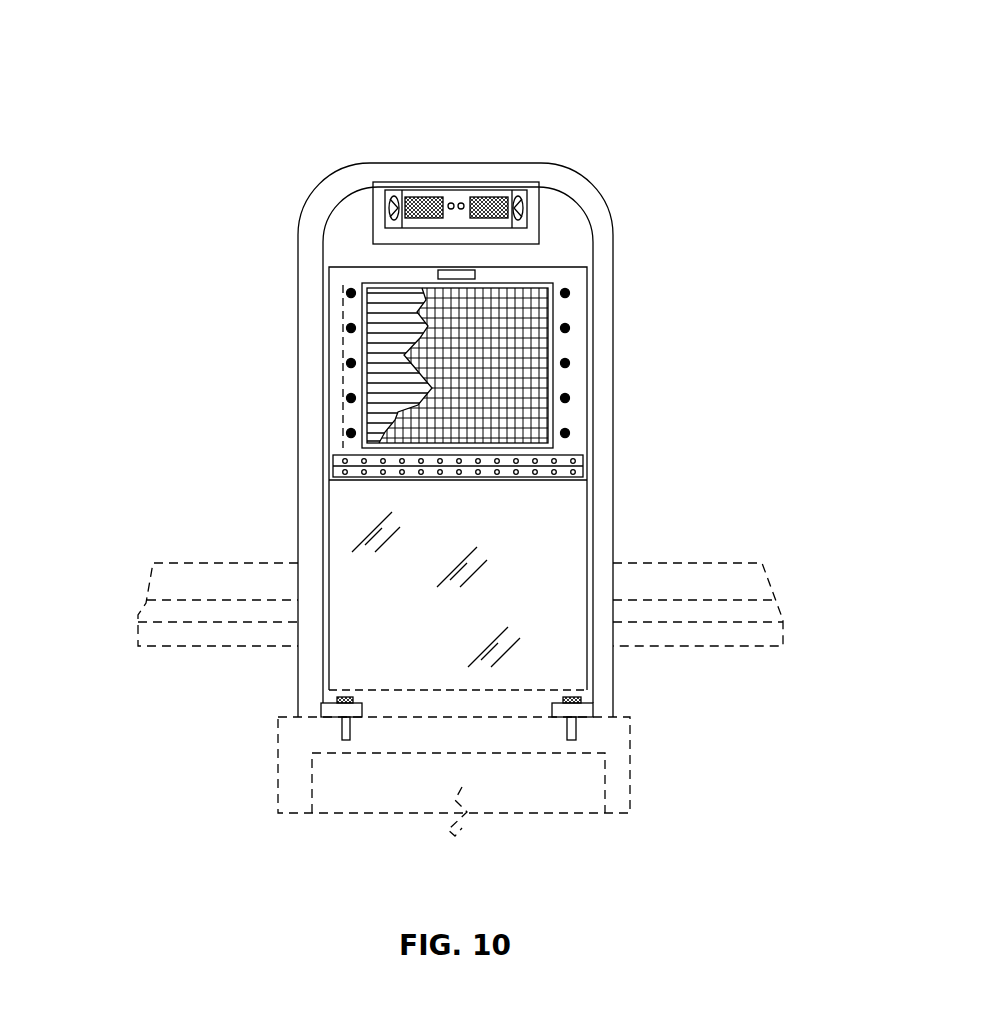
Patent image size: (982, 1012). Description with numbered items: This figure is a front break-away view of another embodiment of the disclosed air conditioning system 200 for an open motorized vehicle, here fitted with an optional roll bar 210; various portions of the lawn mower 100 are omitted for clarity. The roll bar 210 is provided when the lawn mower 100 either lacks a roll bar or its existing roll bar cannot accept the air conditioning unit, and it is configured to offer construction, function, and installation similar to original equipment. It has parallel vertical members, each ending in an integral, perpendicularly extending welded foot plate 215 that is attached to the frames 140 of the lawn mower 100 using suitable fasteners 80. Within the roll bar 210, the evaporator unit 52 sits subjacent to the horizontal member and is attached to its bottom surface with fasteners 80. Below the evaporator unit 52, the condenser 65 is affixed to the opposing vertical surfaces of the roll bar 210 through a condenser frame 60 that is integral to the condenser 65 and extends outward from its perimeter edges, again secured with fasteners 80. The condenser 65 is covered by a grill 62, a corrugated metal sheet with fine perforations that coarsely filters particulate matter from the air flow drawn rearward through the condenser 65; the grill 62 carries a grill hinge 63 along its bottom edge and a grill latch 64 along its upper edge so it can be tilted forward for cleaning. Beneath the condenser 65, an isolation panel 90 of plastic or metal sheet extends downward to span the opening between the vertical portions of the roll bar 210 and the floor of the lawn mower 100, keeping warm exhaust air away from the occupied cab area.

The system 200 is at (727, 48).
The roll bar 210 is at (578, 177).
The evaporator unit 52 is at (457, 192).
The grill latch 64 is at (465, 270).
The condenser frame 60 is at (343, 277).
The grill 62 is at (408, 360).
The condenser 65 is at (370, 348).
The grill hinge 63 is at (583, 462).
The isolation panel 90 is at (568, 565).
The lawn mower 100 is at (143, 602).
The foot plate 215 is at (333, 700).
The frames 140 is at (278, 742).
The fasteners 80 is at (352, 728).